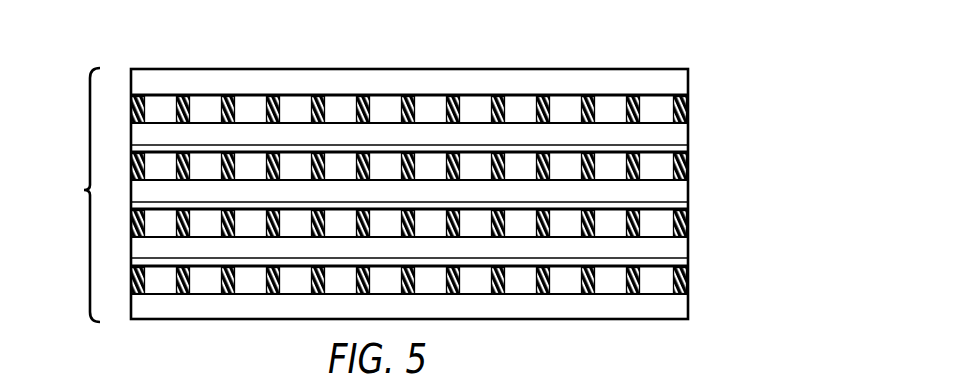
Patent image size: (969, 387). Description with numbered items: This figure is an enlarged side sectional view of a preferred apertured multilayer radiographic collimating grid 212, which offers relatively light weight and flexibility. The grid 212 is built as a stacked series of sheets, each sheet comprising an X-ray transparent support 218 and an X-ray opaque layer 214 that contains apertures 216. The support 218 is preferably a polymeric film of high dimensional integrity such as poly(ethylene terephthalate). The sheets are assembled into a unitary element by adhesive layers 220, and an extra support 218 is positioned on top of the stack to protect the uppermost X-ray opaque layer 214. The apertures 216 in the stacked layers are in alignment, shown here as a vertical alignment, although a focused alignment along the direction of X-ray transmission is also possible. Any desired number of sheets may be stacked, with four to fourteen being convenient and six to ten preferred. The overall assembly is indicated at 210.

The multilayer assembly 210 is at (579, 57).
The grid 212 is at (66, 195).
The X-ray opaque layer 214 is at (688, 104).
The apertures 216 is at (291, 104).
The X-ray transparent support 218 is at (688, 133).
The adhesive layers 220 is at (688, 96).